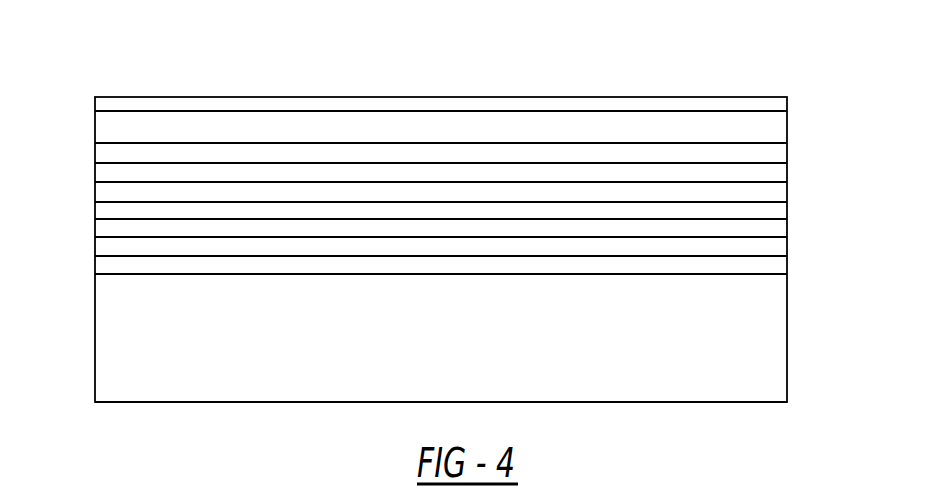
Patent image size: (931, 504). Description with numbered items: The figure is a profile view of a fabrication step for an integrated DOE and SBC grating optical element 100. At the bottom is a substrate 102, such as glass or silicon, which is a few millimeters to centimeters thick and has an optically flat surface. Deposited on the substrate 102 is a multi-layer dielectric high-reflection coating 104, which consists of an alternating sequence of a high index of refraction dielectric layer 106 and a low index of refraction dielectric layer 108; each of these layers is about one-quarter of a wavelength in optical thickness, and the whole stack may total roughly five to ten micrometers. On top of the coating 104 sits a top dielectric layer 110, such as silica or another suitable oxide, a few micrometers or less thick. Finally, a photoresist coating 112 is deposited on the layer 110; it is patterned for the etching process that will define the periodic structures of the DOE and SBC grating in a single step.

The integrated DOE and SBC grating optical element 100 is at (802, 98).
The substrate 102 is at (752, 348).
The multi-layer dielectric high-reflection coating 104 is at (787, 208).
The high index of refraction dielectric layer 106 is at (102, 228).
The low index of refraction dielectric layer 108 is at (102, 211).
The top dielectric layer 110 is at (103, 132).
The photoresist coating 112 is at (108, 102).